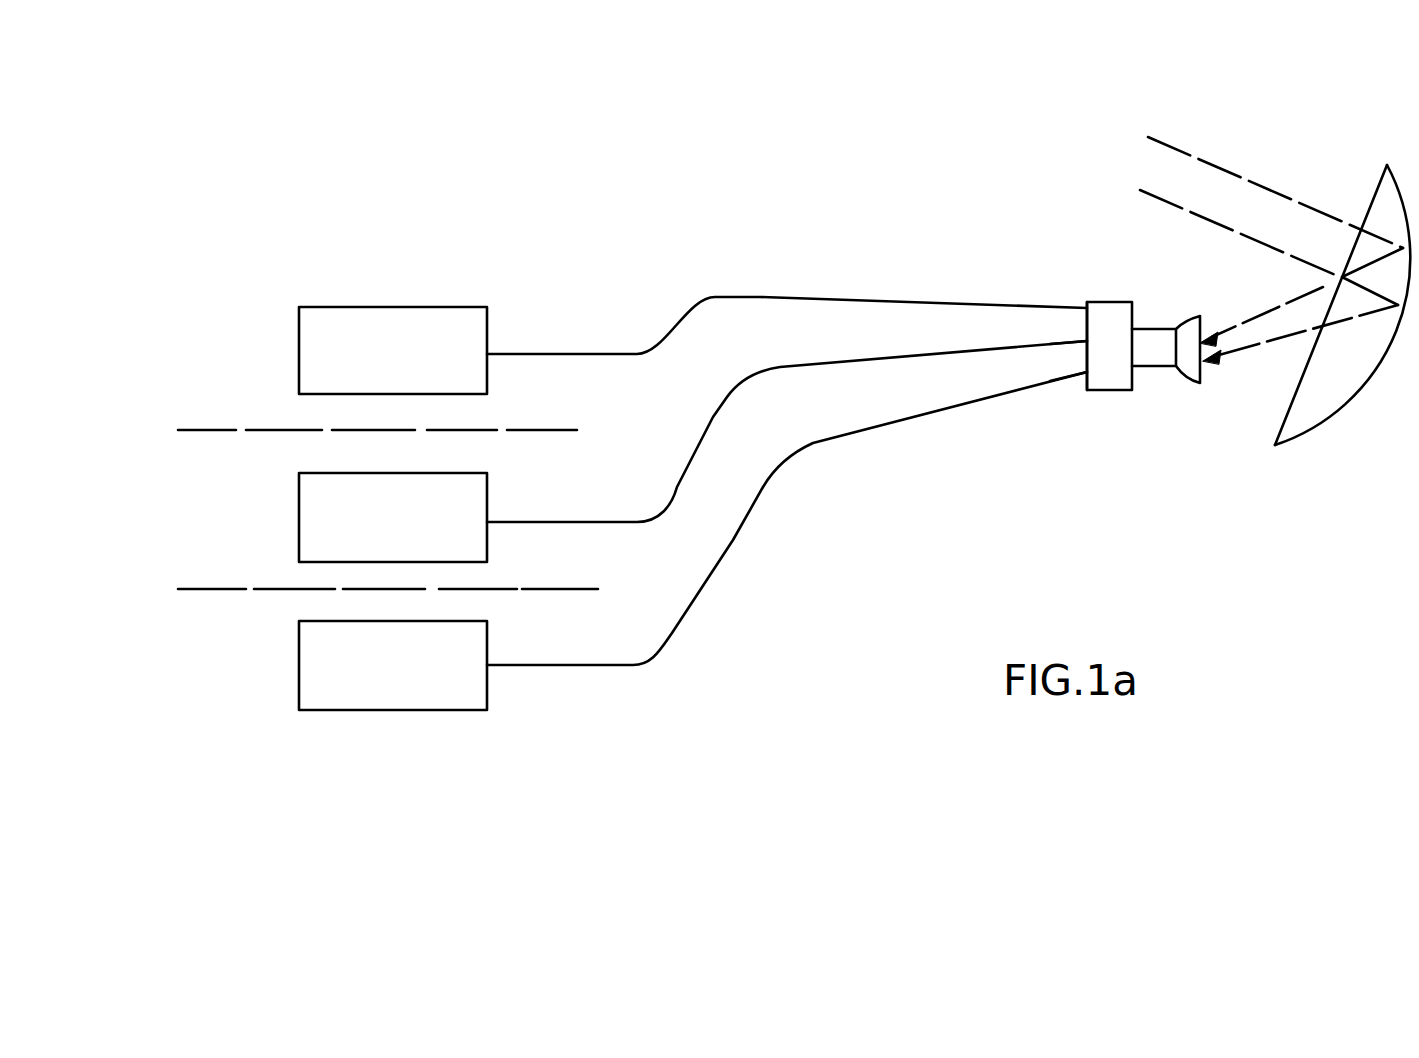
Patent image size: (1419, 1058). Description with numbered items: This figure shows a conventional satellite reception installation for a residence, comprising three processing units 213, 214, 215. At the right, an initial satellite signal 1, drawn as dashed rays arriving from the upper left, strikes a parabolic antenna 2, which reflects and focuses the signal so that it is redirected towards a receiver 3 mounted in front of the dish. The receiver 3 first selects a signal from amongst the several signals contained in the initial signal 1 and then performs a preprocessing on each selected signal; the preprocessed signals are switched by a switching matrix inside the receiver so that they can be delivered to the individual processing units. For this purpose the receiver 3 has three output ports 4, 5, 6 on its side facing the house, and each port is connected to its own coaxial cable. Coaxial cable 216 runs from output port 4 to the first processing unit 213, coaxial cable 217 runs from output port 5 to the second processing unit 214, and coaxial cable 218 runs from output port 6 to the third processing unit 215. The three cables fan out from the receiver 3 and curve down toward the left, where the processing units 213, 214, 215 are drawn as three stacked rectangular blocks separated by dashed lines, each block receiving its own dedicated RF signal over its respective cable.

The initial satellite signal 1 is at (1217, 167).
The parabolic antenna 2 is at (1327, 390).
The receiver 3 is at (1115, 317).
The output port 4 is at (1087, 307).
The output port 5 is at (1085, 344).
The output port 6 is at (1084, 372).
The processing unit 213 is at (332, 307).
The processing unit 214 is at (299, 519).
The processing unit 215 is at (299, 669).
The coaxial cable 216 is at (845, 299).
The coaxial cable 217 is at (813, 365).
The coaxial cable 218 is at (838, 442).